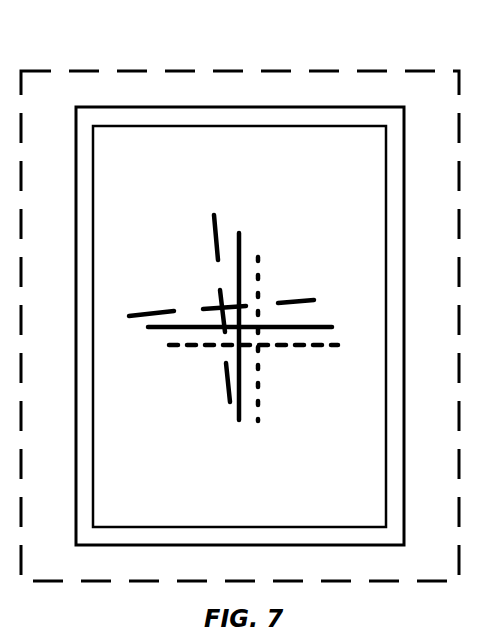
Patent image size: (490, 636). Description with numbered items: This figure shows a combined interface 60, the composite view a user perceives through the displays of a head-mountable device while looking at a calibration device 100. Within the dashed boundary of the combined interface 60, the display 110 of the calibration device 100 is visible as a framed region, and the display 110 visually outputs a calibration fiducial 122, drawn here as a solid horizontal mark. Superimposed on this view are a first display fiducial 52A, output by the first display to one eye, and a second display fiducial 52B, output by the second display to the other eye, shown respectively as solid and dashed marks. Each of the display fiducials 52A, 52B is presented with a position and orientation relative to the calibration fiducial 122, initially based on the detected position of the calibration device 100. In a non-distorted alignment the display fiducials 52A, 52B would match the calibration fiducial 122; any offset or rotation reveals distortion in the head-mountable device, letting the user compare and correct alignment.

The combined interface 60 is at (32, 68).
The calibration device 100 is at (105, 107).
The display 110 is at (360, 126).
The first display fiducial 52A is at (143, 312).
The second display fiducial 52B is at (352, 343).
The calibration fiducial 122 is at (320, 325).